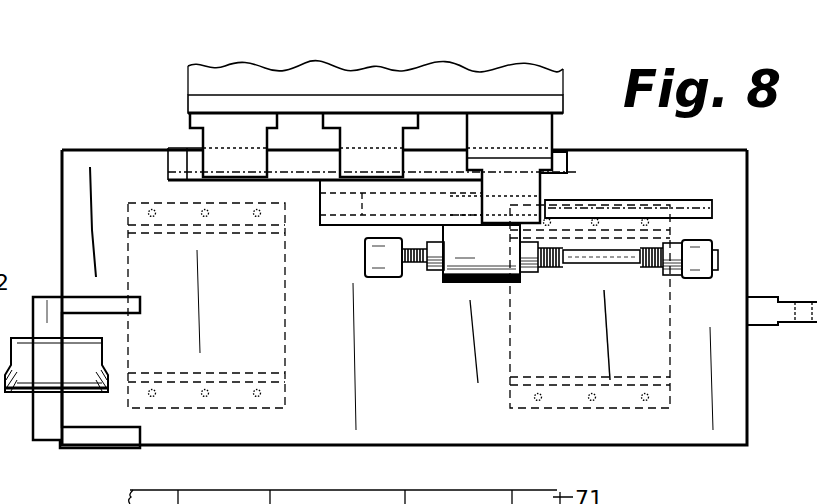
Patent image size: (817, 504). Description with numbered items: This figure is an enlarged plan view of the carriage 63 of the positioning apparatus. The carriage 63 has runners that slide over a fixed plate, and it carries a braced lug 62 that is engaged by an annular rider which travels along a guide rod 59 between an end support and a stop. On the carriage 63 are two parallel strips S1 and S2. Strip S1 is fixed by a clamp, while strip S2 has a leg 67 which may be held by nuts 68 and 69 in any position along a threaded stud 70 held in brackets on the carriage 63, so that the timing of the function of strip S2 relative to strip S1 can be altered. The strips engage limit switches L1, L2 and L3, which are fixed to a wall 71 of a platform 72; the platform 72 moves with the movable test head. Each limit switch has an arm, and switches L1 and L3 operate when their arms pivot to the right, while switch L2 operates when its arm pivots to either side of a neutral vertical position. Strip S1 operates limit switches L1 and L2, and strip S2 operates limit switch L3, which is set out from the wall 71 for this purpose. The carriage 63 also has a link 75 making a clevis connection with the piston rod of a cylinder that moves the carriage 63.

The guide rod 59 is at (83, 345).
The braced lug 62 is at (53, 413).
The carriage 63 is at (117, 163).
The leg 67 is at (475, 283).
The nut 68 is at (428, 274).
The nut 69 is at (525, 275).
The threaded stud 70 is at (620, 264).
The wall 71 is at (550, 108).
The platform 72 is at (548, 86).
The link 75 is at (782, 325).
The limit switch L1 is at (222, 142).
The limit switch L2 is at (347, 157).
The limit switch L3 is at (528, 192).
The strip S1 is at (562, 148).
The strip S2 is at (710, 210).